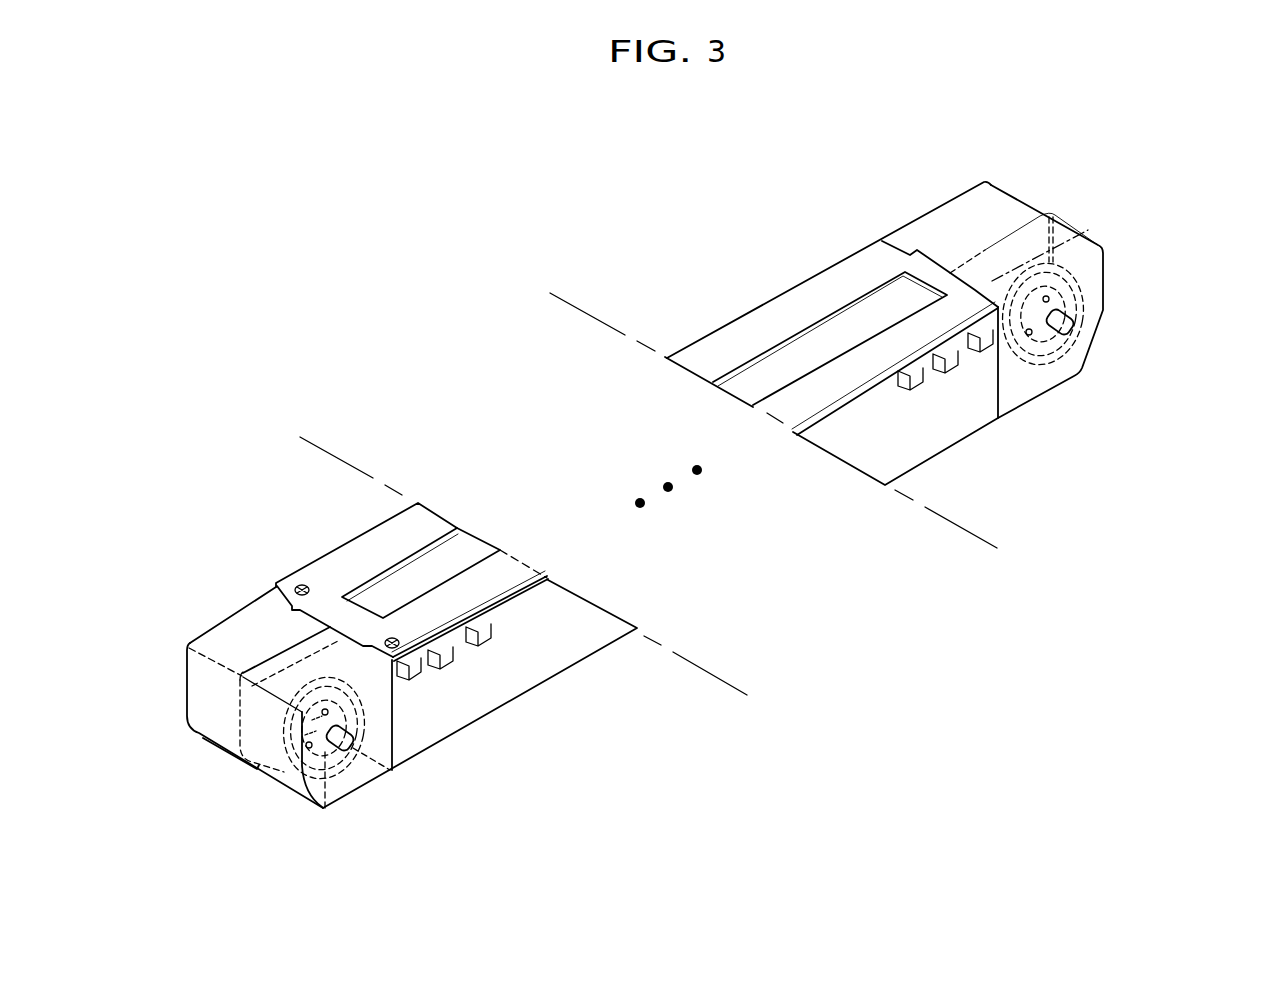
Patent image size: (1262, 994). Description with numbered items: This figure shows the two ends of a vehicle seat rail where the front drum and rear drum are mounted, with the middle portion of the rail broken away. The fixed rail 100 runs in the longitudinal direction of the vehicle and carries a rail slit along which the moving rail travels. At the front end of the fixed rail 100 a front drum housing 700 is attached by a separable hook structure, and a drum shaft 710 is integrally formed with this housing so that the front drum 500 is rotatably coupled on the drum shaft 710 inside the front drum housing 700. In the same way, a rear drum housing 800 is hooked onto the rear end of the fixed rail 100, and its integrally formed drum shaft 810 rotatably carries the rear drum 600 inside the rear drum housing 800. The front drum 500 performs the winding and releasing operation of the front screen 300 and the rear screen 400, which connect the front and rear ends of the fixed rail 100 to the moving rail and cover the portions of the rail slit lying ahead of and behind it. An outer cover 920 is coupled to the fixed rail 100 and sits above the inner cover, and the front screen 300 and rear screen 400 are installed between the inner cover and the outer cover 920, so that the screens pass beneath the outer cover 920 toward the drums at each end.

The fixed rail 100 is at (522, 665).
The front screen 300 is at (447, 560).
The rear screen 400 is at (843, 332).
The front drum 500 is at (325, 765).
The rear drum 600 is at (1075, 296).
The front drum housing 700 is at (218, 727).
The drum shaft 710 is at (352, 748).
The rear drum housing 800 is at (988, 203).
The drum shaft 810 is at (1073, 322).
The outer cover 920 is at (353, 558).